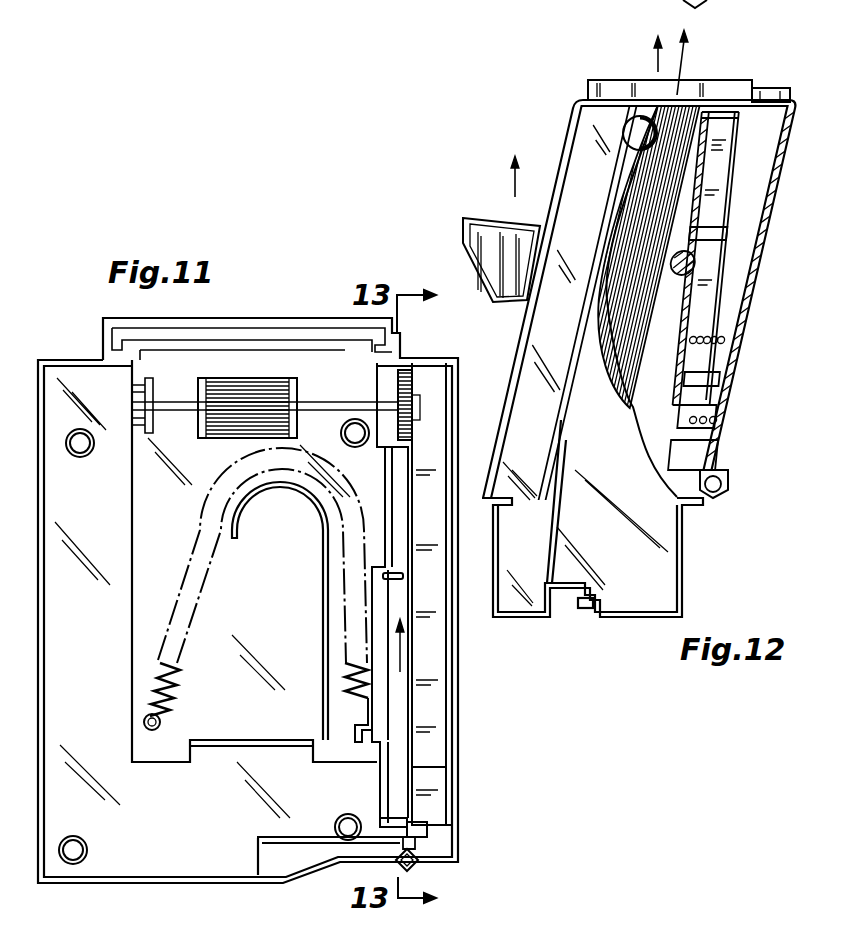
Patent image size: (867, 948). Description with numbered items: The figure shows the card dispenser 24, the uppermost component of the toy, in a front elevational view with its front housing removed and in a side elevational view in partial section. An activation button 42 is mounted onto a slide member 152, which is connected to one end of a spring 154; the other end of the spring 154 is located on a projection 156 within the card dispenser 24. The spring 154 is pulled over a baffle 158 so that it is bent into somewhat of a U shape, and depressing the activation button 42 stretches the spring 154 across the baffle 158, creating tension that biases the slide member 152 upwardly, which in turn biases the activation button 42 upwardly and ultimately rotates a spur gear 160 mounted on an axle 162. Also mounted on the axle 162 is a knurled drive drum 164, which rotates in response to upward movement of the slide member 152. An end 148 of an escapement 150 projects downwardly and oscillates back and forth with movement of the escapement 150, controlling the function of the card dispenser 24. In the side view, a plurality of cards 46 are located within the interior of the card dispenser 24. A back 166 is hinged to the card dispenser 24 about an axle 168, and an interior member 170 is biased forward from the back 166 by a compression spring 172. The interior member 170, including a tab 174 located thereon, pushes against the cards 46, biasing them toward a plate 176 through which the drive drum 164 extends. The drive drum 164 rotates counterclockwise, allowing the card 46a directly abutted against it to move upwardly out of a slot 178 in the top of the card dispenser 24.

In FIG. 11, the card dispenser 24 is at (306, 280).
In FIG. 12, the card dispenser 24 is at (722, 65).
In FIG. 12, the activation button 42 is at (470, 213).
In FIG. 12, the cards 46 is at (652, 197).
In FIG. 12, the card 46a is at (684, 33).
In FIG. 11, the end of escapement 148 is at (417, 862).
In FIG. 11, the escapement 150 is at (430, 835).
In FIG. 11, the slide member 152 is at (407, 672).
In FIG. 11, the spring 154 is at (183, 575).
In FIG. 11, the projection 156 is at (143, 722).
In FIG. 11, the baffle 158 is at (273, 490).
In FIG. 11, the spur gear 160 is at (403, 370).
In FIG. 11, the axle 162 is at (342, 403).
In FIG. 11, the knurled drive drum 164 is at (247, 387).
In FIG. 12, the knurled drive drum 164 is at (640, 143).
In FIG. 12, the back 166 is at (758, 291).
In FIG. 12, the axle 168 is at (713, 498).
In FIG. 12, the interior member 170 is at (710, 167).
In FIG. 12, the compression spring 172 is at (713, 333).
In FIG. 12, the tab 174 is at (667, 270).
In FIG. 12, the plate 176 is at (640, 170).
In FIG. 12, the slot 178 is at (696, 78).